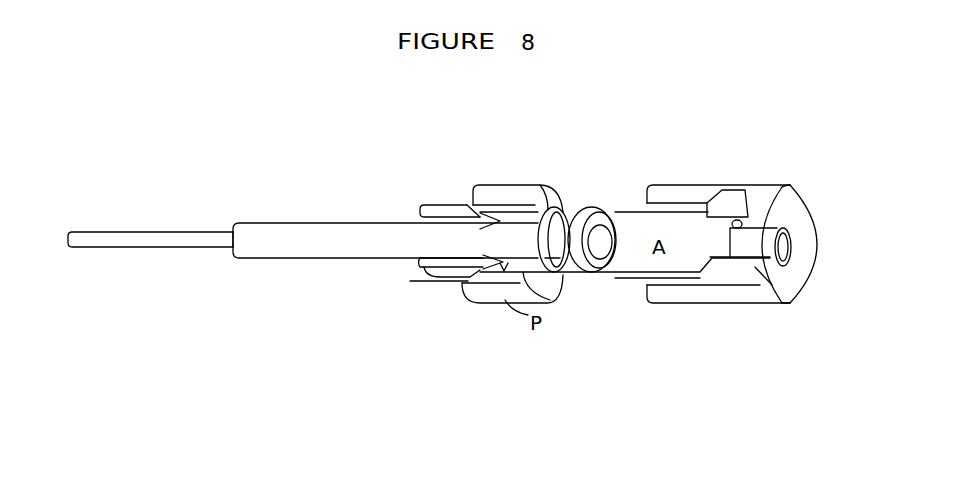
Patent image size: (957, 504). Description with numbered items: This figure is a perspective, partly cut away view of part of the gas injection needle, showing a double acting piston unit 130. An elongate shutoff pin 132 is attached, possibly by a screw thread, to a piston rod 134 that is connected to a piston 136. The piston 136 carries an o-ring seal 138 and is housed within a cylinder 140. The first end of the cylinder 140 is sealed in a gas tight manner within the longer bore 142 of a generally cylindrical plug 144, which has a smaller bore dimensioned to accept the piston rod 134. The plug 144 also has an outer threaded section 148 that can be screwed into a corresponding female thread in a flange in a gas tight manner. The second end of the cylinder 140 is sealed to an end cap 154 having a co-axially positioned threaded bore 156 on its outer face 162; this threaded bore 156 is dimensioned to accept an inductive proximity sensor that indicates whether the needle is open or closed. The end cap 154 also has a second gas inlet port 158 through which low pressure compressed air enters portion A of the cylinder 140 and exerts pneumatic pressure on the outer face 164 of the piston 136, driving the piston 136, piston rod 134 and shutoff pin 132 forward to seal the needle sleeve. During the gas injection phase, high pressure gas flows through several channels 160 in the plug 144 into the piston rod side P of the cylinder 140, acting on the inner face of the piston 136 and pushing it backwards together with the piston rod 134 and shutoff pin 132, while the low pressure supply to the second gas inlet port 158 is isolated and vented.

The double acting piston unit 130 is at (513, 395).
The shutoff pin 132 is at (172, 238).
The piston rod 134 is at (359, 249).
The piston 136 is at (602, 210).
The o-ring seal 138 is at (563, 198).
The cylinder 140 is at (643, 270).
The longer bore 142 is at (500, 276).
The plug 144 is at (488, 298).
The outer threaded section 148 is at (410, 281).
The end cap 154 is at (737, 283).
The threaded bore 156 is at (783, 247).
The second gas inlet port 158 is at (728, 215).
The channels 160 is at (505, 210).
The outer face 162 is at (798, 220).
The outer face of piston 164 is at (603, 245).